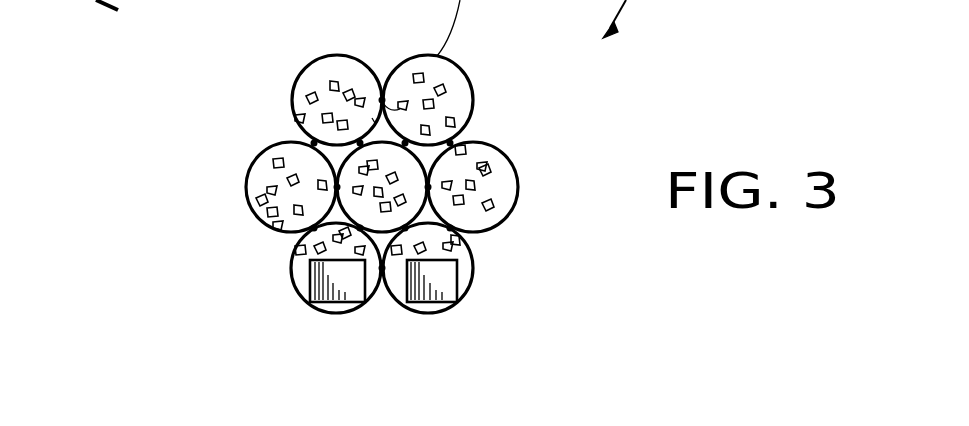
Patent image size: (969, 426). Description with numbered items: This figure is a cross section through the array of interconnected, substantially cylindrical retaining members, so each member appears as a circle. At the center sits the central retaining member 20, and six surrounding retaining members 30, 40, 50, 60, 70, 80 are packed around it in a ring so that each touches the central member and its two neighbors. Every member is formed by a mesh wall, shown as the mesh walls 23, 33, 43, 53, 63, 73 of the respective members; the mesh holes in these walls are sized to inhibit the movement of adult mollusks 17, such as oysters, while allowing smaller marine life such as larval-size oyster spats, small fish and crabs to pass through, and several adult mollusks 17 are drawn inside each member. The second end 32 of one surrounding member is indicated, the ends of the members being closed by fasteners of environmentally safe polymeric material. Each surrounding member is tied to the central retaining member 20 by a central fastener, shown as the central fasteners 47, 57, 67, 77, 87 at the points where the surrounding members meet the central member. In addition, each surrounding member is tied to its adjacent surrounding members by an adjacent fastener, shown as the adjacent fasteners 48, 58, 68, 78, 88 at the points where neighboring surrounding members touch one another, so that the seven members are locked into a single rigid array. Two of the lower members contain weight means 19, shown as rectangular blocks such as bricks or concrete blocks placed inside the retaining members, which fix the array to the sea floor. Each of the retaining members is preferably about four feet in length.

The adult mollusks 17 is at (372, 118).
The weight means 19 is at (352, 308).
The central retaining member 20 is at (481, 160).
The mesh wall 23 is at (455, 228).
The surrounding retaining member 30 is at (515, 215).
The second end 32 is at (428, 187).
The mesh wall 33 is at (520, 185).
The surrounding retaining member 40 is at (477, 256).
The mesh wall 43 is at (476, 278).
The central fastener 47 is at (460, 240).
The adjacent fastener 48 is at (382, 290).
The surrounding retaining member 50 is at (300, 296).
The mesh wall 53 is at (317, 307).
The central fastener 57 is at (338, 238).
The adjacent fastener 58 is at (300, 244).
The surrounding retaining member 60 is at (246, 210).
The mesh wall 63 is at (300, 224).
The central fastener 67 is at (328, 180).
The adjacent fastener 68 is at (311, 143).
The surrounding retaining member 70 is at (291, 78).
The mesh wall 73 is at (287, 108).
The central fastener 77 is at (323, 120).
The adjacent fastener 78 is at (394, 66).
The surrounding retaining member 80 is at (460, 62).
The central fastener 87 is at (420, 130).
The adjacent fastener 88 is at (418, 305).